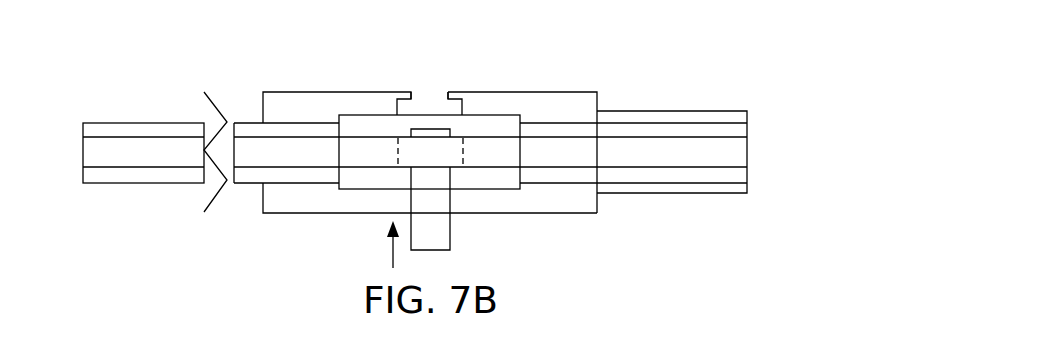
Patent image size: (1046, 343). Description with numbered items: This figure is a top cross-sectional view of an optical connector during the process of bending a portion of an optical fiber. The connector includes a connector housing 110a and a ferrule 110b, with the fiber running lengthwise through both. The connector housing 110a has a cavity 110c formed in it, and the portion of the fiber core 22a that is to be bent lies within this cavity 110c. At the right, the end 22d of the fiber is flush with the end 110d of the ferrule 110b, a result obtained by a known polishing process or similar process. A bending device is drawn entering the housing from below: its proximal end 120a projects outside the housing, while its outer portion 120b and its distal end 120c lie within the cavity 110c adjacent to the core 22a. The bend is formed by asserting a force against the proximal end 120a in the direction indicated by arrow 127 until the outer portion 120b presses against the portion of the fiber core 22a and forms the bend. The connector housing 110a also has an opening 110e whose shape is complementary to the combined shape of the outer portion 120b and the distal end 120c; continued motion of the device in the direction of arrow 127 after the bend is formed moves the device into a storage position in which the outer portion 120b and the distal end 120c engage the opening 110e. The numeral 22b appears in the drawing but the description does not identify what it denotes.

The core 22a is at (270, 145).
The second cable 22b is at (255, 175).
The end of the fiber 22d is at (743, 157).
The connector housing 110a is at (560, 93).
The ferrule 110b is at (642, 111).
The cavity 110c is at (370, 115).
The end of ferrule 110d is at (745, 193).
The opening 110e is at (440, 83).
The proximal end of the device 120a is at (445, 250).
The outer portion of the device 120b is at (470, 143).
The distal end of the device 120c is at (443, 129).
The arrow 127 is at (393, 256).